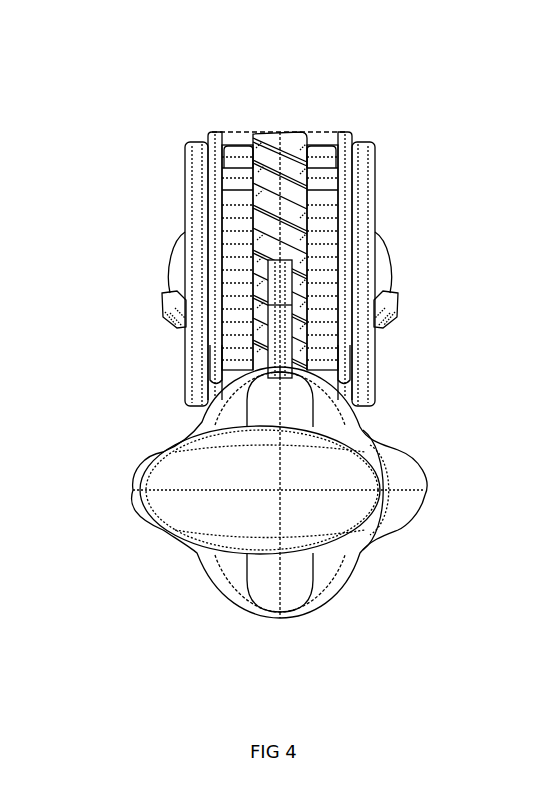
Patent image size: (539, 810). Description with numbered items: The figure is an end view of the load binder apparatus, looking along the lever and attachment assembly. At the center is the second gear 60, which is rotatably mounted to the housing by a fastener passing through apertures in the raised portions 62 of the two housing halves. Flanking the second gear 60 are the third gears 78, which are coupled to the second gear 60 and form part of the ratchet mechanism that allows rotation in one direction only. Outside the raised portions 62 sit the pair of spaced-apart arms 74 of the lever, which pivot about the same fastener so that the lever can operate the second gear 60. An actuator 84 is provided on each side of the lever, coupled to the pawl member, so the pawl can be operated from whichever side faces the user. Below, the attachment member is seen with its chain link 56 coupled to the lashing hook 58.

The chain link 56 is at (290, 598).
The lashing hook 58 is at (133, 478).
The second gear 60 is at (282, 137).
The raised portion 62 is at (209, 137).
The arms 74 is at (186, 152).
The third gear 78 is at (233, 142).
The actuator 84 is at (163, 308).